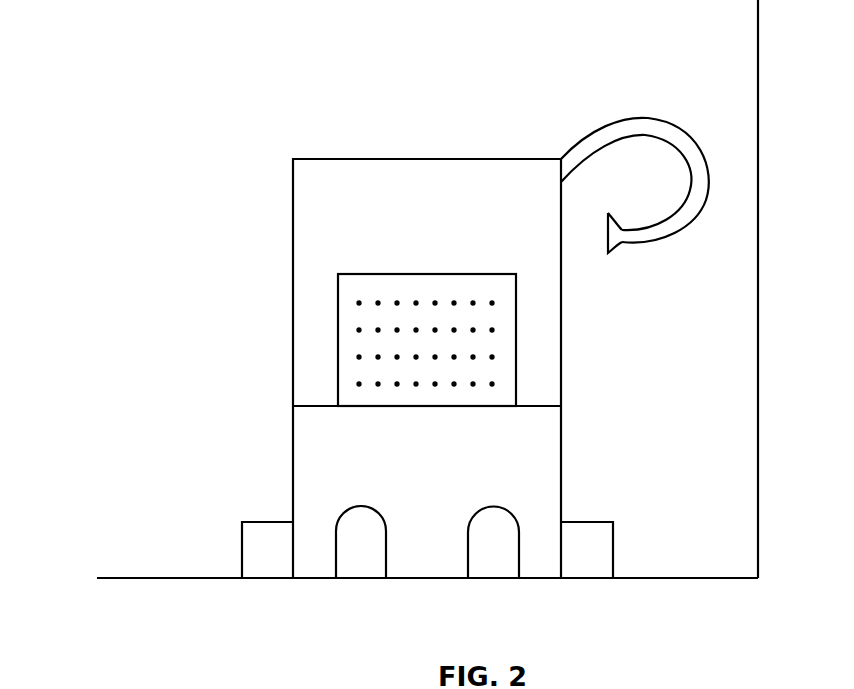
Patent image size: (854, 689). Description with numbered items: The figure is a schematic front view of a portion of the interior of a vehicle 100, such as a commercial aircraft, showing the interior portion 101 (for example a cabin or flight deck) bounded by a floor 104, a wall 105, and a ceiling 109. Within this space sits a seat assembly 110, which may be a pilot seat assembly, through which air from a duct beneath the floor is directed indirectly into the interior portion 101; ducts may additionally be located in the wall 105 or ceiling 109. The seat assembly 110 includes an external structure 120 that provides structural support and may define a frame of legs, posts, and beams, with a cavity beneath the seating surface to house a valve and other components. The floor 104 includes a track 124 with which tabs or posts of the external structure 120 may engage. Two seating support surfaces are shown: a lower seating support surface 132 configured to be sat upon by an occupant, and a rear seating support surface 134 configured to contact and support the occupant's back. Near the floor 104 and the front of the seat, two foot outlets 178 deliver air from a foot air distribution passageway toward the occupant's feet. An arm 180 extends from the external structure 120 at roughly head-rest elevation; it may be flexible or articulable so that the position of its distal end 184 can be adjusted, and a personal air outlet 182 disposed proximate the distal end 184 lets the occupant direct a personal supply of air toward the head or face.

The vehicle 100 is at (126, 36).
The interior portion 101 is at (472, 100).
The floor 104 is at (171, 577).
The wall 105 is at (757, 359).
The ceiling 109 is at (452, 0).
The seat assembly 110 is at (285, 298).
The external structure 120 is at (562, 483).
The track 124 is at (270, 520).
The lower seating support surface 132 is at (498, 405).
The rear seating support surface 134 is at (498, 313).
The foot outlet 178 is at (359, 556).
The arm 180 is at (662, 120).
The personal air outlet 182 is at (608, 233).
The distal end 184 is at (632, 208).